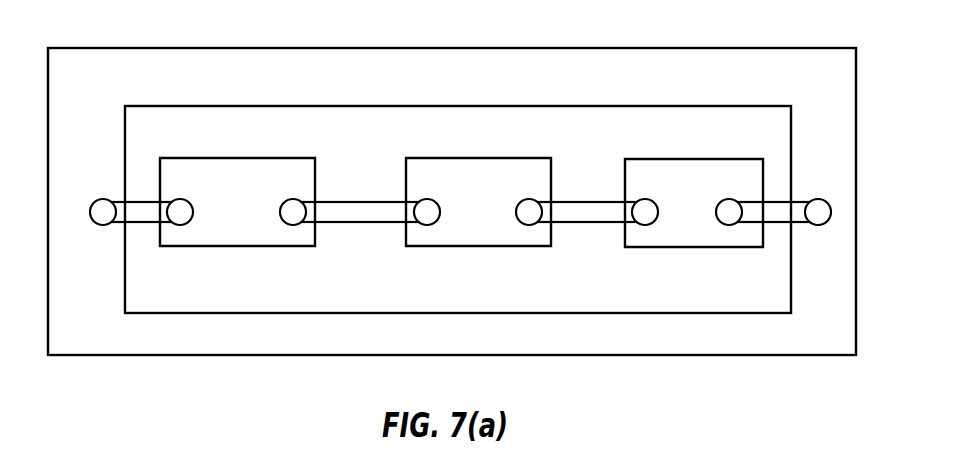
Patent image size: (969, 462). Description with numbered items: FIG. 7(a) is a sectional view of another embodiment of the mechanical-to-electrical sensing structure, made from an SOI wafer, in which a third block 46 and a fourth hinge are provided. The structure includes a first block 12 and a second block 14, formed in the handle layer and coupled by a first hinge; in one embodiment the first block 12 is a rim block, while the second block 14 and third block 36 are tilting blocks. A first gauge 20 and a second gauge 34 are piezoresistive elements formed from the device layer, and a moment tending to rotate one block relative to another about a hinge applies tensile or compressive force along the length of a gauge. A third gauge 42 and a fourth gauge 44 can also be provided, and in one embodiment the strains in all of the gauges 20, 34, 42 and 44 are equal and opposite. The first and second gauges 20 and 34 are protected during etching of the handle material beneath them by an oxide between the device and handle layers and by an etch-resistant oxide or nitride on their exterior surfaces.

The first movable block 12 is at (191, 305).
The second movable block 14 is at (254, 218).
The first gauge 20 is at (141, 224).
The second gauge 34 is at (358, 224).
The third block 36 is at (708, 220).
The third gauge 42 is at (584, 224).
The fourth gauge 44 is at (774, 224).
The third block 46 is at (494, 220).